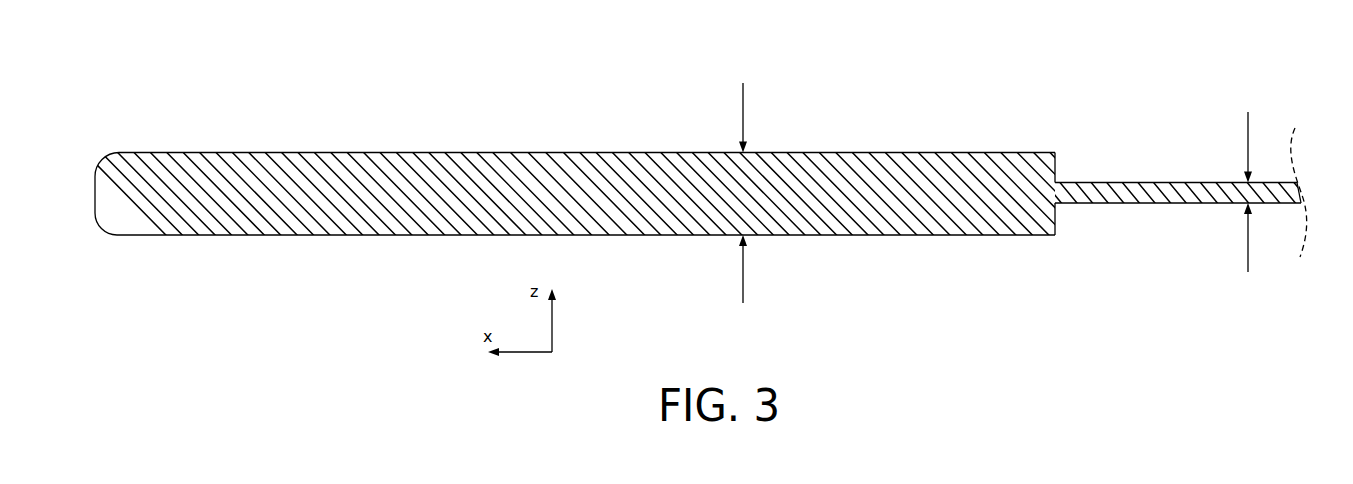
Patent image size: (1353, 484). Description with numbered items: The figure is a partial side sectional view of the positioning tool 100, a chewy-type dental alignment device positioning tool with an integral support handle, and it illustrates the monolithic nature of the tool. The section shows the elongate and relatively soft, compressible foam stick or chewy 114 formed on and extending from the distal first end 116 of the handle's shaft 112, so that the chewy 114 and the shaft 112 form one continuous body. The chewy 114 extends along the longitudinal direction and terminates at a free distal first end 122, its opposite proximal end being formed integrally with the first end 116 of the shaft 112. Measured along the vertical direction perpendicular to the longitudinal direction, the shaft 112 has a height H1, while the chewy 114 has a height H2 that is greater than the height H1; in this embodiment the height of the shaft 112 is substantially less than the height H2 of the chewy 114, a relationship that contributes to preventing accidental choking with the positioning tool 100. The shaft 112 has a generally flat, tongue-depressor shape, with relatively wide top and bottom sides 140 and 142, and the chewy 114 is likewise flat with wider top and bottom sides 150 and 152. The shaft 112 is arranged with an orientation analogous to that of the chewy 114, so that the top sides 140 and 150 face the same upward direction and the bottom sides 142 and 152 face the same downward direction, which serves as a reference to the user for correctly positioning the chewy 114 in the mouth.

The positioning tool 100 is at (553, 50).
The shaft 112 is at (1151, 204).
The chewy 114 is at (465, 150).
The first end of the shaft 116 is at (1068, 181).
The first end of the chewy 122 is at (1057, 157).
The top side of the shaft 140 is at (1170, 181).
The bottom side of the shaft 142 is at (1187, 204).
The top side of the chewy 150 is at (665, 152).
The bottom side of the chewy 152 is at (665, 236).
The height of the shaft H1 is at (1263, 187).
The height of the chewy H2 is at (759, 188).